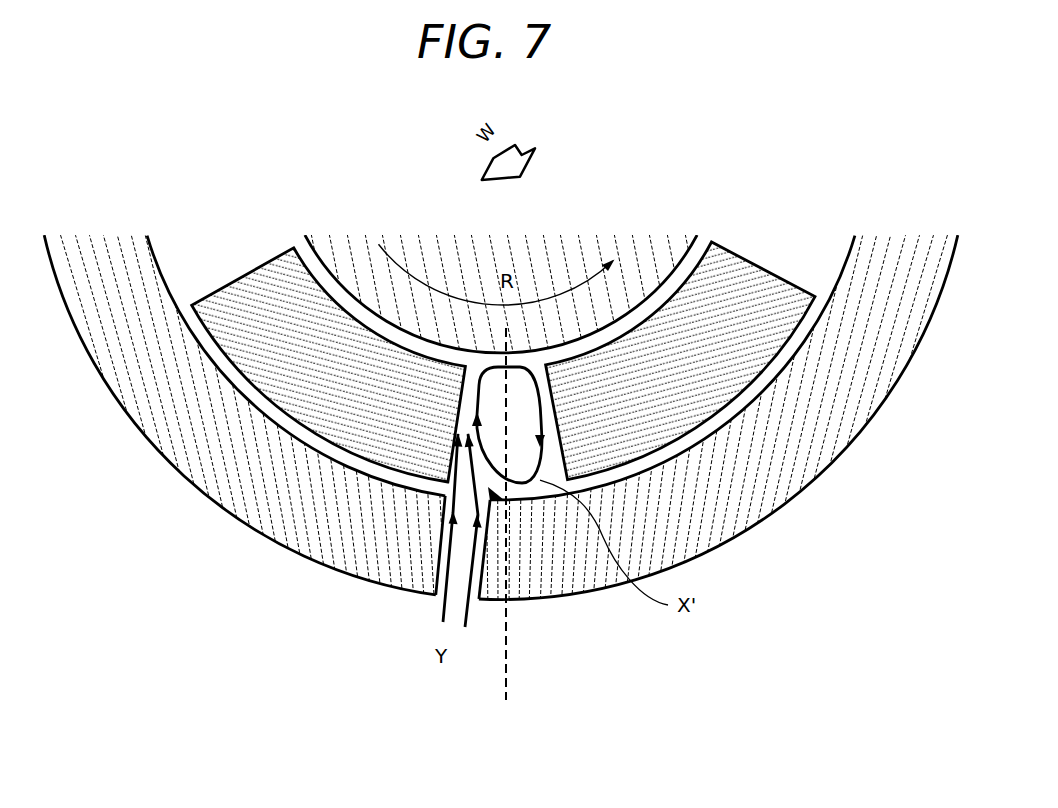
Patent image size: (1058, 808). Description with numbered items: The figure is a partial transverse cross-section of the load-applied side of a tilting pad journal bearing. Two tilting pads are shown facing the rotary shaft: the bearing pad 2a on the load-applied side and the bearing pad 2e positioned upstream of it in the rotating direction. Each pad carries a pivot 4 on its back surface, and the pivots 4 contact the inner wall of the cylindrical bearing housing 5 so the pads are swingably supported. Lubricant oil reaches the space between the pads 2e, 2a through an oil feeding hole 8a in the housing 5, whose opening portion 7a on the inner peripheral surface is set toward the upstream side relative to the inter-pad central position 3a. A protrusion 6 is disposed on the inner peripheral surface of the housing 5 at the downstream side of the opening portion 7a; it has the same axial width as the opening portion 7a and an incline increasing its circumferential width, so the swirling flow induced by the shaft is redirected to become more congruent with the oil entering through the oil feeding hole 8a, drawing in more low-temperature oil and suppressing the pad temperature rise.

The bearing pad 2a is at (760, 330).
The bearing pad 2e is at (360, 433).
The inter-pad central position 3a is at (504, 530).
The pivot 4 is at (318, 437).
The bearing housing 5 is at (148, 420).
The protrusion 6 is at (491, 502).
The opening portion 7a is at (445, 499).
The oil feeding hole 8a is at (395, 589).